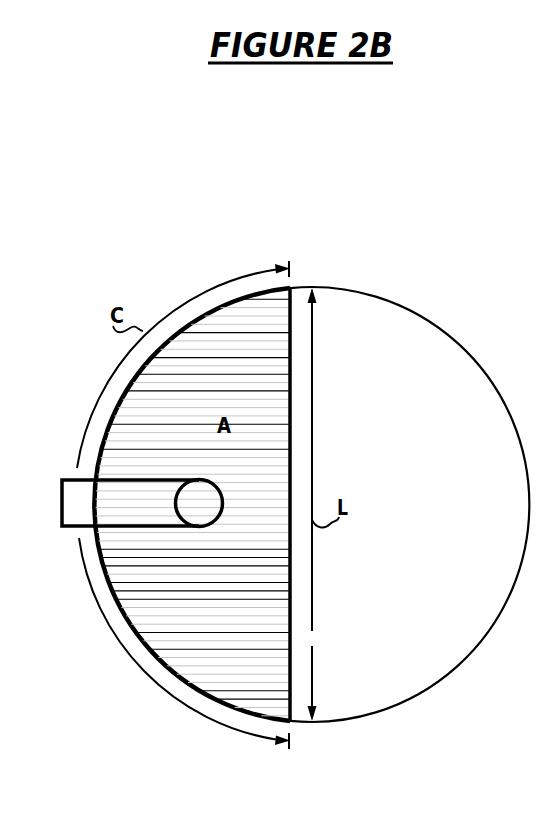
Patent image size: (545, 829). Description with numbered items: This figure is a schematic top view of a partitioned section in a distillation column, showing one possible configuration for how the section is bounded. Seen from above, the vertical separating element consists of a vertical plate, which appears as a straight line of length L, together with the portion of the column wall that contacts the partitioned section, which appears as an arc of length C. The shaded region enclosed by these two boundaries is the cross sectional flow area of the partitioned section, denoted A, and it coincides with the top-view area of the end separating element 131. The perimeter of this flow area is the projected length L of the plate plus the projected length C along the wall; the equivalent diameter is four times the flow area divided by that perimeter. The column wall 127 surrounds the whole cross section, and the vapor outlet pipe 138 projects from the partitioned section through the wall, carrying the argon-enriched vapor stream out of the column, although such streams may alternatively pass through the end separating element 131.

The circular disc blank 127 is at (378, 291).
The end separating element 131 is at (278, 603).
The vapor outlet pipe 138 is at (68, 530).